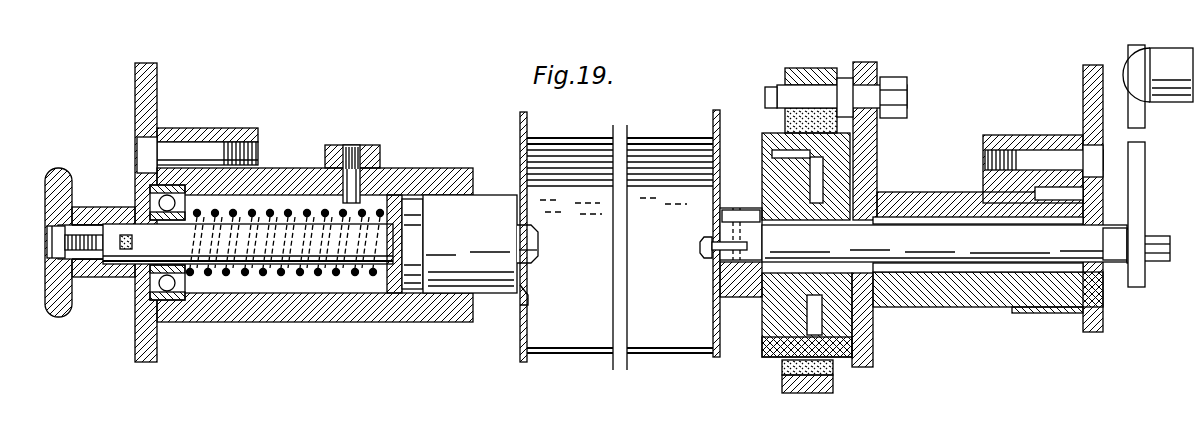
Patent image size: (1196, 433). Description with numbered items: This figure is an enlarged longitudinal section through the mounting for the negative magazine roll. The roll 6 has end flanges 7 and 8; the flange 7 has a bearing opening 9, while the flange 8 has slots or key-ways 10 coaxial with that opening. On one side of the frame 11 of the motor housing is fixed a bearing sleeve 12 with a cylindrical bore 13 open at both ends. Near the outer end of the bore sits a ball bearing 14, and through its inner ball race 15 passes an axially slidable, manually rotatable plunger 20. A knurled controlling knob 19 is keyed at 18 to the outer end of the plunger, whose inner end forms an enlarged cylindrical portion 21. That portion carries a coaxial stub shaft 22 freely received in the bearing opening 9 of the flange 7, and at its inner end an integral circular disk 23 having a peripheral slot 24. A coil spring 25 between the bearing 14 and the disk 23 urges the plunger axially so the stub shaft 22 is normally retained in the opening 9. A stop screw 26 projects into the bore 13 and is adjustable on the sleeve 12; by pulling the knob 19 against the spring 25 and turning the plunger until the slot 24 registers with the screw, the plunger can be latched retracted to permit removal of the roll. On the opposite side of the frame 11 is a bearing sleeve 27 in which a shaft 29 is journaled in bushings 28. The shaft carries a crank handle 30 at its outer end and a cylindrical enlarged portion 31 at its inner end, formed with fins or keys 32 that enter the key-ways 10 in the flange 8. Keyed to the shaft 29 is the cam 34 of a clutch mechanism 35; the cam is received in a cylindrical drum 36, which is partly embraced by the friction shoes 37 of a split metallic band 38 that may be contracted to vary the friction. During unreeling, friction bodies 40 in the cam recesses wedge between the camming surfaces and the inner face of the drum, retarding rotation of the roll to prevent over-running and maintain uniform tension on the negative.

The roll 6 is at (620, 247).
The end flange 7 is at (520, 341).
The end flange 8 is at (720, 335).
The bearing opening 9 is at (526, 264).
The slots or key-ways 10 is at (700, 247).
The frame 11 is at (143, 352).
The bearing sleeve 12 is at (408, 314).
The cylindrical bore 13 is at (237, 290).
The ball bearing 14 is at (163, 196).
The inner ball race 15 is at (150, 281).
The key 18 is at (122, 234).
The knurled controlling knob 19 is at (56, 305).
The plunger 20 is at (791, 407).
The enlarged cylindrical portion 21 is at (350, 95).
The stub shaft 22 is at (539, 238).
The circular disk 23 is at (394, 233).
The slot 24 is at (394, 194).
The coil spring 25 is at (280, 278).
The stop screw 26 is at (355, 146).
The bearing sleeve 27 is at (960, 290).
The bushings 28 is at (905, 298).
The shaft 29 is at (966, 244).
The crank handle 30 is at (1140, 176).
The cylindrical enlarged portion 31 is at (748, 212).
The fins or keys 32 is at (718, 250).
The cam 34 is at (785, 298).
The clutch mechanism 35 is at (840, 178).
The cylindrical drum 36 is at (857, 339).
The friction shoes 37 is at (783, 128).
The split metallic band 38 is at (815, 394).
The friction bodies 40 is at (795, 155).